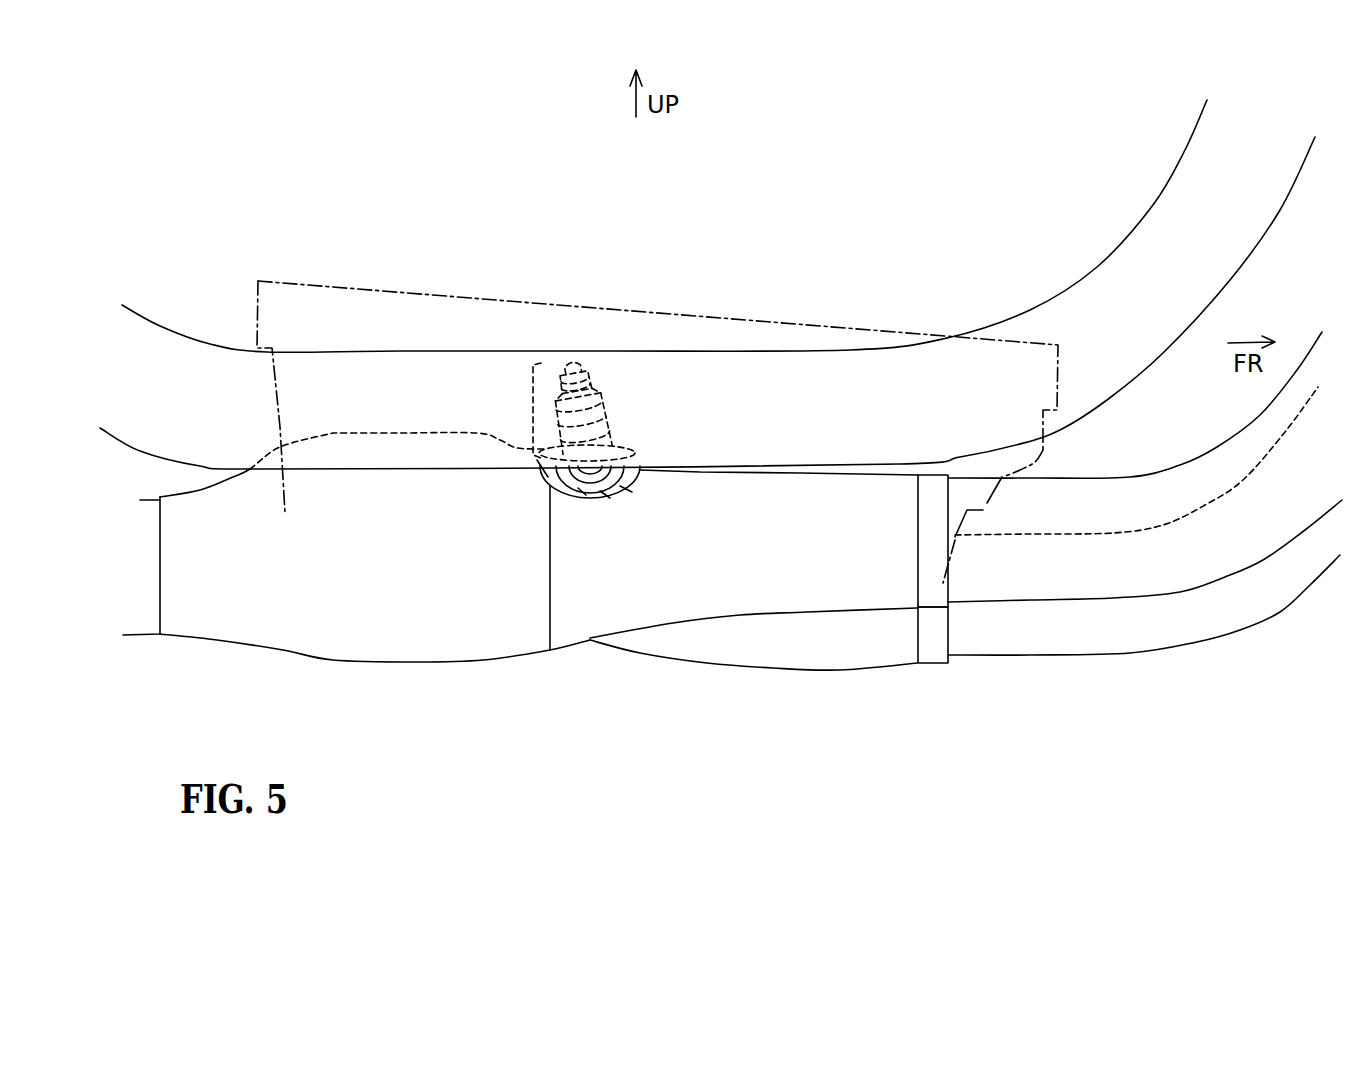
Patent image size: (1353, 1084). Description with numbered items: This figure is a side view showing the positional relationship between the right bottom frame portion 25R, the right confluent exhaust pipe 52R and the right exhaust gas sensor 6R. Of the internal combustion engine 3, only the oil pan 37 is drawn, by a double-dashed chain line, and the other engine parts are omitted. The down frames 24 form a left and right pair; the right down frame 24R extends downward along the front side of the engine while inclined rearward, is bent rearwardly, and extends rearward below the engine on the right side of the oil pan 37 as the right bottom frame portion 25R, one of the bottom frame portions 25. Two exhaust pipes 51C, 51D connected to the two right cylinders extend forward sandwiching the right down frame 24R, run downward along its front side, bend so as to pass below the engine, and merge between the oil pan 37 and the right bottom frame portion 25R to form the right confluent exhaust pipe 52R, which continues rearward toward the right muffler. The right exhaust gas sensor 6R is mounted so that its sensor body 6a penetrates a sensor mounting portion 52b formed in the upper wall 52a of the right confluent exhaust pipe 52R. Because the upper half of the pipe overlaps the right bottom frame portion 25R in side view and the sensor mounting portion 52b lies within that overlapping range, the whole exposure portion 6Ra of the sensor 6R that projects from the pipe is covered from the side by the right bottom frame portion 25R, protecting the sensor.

The oil pan 37 is at (322, 287).
The internal combustion engine 3 is at (657, 322).
The right bottom frame portion 25R is at (807, 345).
The bottom frame portion 25 is at (560, 339).
The right down frame 24R is at (1153, 205).
The down frame 24 is at (1131, 266).
The right confluent exhaust pipe 52R is at (590, 642).
The upper wall 52a is at (517, 447).
The sensor mounting portion 52b is at (635, 449).
The right exhaust gas sensor 6R is at (652, 404).
The exposure portion 6Ra is at (517, 445).
The sensor body 6a is at (604, 397).
The exhaust pipe 51C is at (1230, 633).
The exhaust pipe 51D is at (1183, 590).